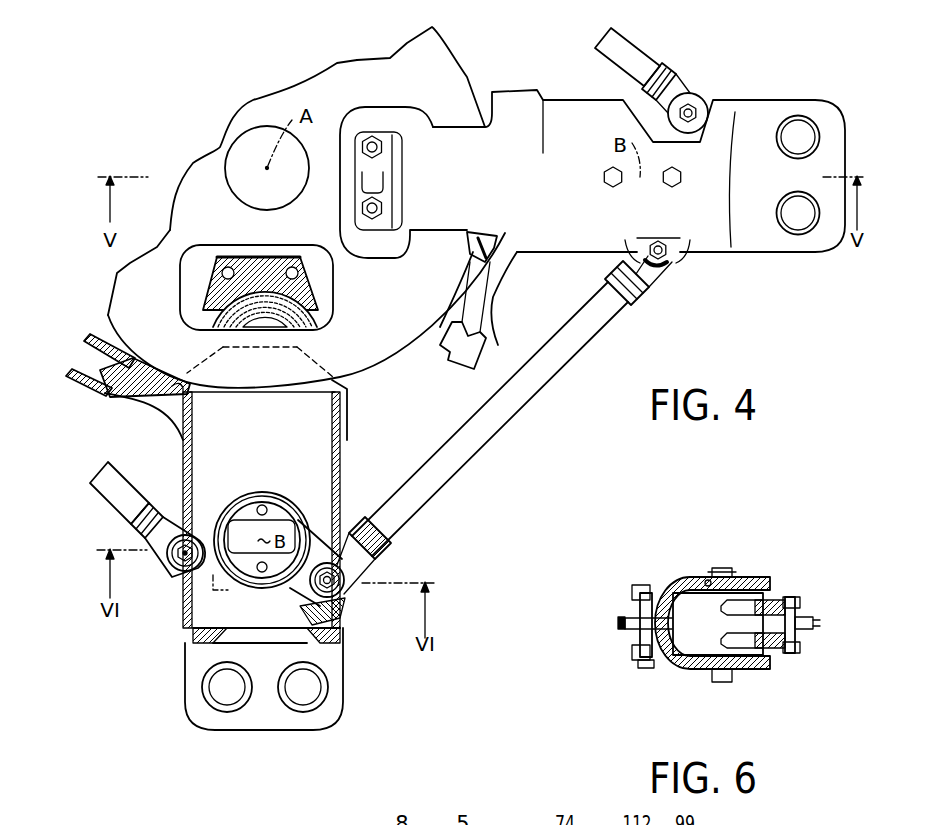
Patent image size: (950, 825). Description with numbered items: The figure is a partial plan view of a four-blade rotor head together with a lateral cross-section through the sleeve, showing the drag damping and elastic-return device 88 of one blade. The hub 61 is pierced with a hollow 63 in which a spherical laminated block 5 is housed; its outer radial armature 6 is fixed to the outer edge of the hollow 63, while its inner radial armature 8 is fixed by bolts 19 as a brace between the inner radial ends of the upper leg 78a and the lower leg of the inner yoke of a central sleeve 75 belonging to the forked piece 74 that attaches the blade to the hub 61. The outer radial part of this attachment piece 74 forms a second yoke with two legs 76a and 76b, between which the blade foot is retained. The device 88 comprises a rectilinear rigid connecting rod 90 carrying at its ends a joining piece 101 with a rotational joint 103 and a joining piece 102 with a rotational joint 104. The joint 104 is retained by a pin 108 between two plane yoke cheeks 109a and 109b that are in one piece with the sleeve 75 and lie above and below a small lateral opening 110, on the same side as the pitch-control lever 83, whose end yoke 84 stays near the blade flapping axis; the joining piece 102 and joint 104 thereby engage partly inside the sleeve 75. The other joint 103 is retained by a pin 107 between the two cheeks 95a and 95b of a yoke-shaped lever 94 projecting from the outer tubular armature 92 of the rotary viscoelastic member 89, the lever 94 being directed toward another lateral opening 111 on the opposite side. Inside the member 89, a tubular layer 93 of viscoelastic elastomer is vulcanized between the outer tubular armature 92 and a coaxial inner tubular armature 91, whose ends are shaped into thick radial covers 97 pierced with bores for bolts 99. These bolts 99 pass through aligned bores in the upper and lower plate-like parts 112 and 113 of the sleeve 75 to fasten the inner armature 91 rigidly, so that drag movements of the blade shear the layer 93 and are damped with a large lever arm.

In FIG. 4, the hub 61 is at (257, 107).
In FIG. 4, the hollow 63 is at (407, 107).
In FIG. 4, the upper leg 78a is at (450, 133).
In FIG. 4, the forked piece 74 is at (578, 90).
In FIG. 4, the leg 76a is at (783, 242).
In FIG. 4, the leg 76b is at (270, 720).
In FIG. 4, the bolt 19 is at (282, 255).
In FIG. 4, the inner radial armature 8 is at (203, 291).
In FIG. 4, the spherical laminated block 5 is at (320, 314).
In FIG. 4, the outer radial armature 6 is at (247, 330).
In FIG. 4, the end yoke 84 is at (97, 340).
In FIG. 4, the pitch-control lever 83 is at (127, 397).
In FIG. 4, the central sleeve 75 is at (342, 463).
In FIG. 6, the central sleeve 75 is at (672, 580).
In FIG. 4, the lateral opening 110 is at (202, 510).
In FIG. 4, the lateral opening 111 is at (353, 507).
In FIG. 4, the radial cover 97 is at (273, 507).
In FIG. 4, the inner tubular armature 91 is at (280, 583).
In FIG. 4, the tubular layer 93 is at (298, 517).
In FIG. 4, the bolt 99 is at (663, 187).
In FIG. 6, the bolt 99 is at (708, 578).
In FIG. 4, the outer tubular armature 92 is at (230, 580).
In FIG. 6, the outer tubular armature 92 is at (688, 657).
In FIG. 4, the member 89 is at (238, 590).
In FIG. 4, the cheek 95b is at (330, 628).
In FIG. 6, the cheek 95b is at (782, 650).
In FIG. 6, the cheek 95a is at (780, 600).
In FIG. 4, the pin 107 is at (710, 103).
In FIG. 4, the rotational joint 103 is at (340, 577).
In FIG. 6, the rotational joint 103 is at (800, 617).
In FIG. 4, the joining piece 101 is at (372, 547).
In FIG. 6, the joining piece 101 is at (798, 652).
In FIG. 4, the connecting rod 90 is at (636, 24).
In FIG. 4, the joining piece 102 is at (645, 289).
In FIG. 6, the joining piece 102 is at (640, 607).
In FIG. 4, the lever 94 is at (674, 108).
In FIG. 4, the pin 108 is at (677, 260).
In FIG. 6, the pin 108 is at (642, 668).
In FIG. 4, the yoke cheek 109a is at (663, 270).
In FIG. 6, the yoke cheek 109a is at (636, 590).
In FIG. 6, the yoke cheek 109b is at (636, 652).
In FIG. 4, the rotational joint 104 is at (172, 563).
In FIG. 6, the rotational joint 104 is at (622, 623).
In FIG. 4, the drag damping and elastic-return device 88 is at (444, 502).
In FIG. 6, the upper longitudinal part 112 is at (726, 568).
In FIG. 6, the lower longitudinal part 113 is at (718, 684).